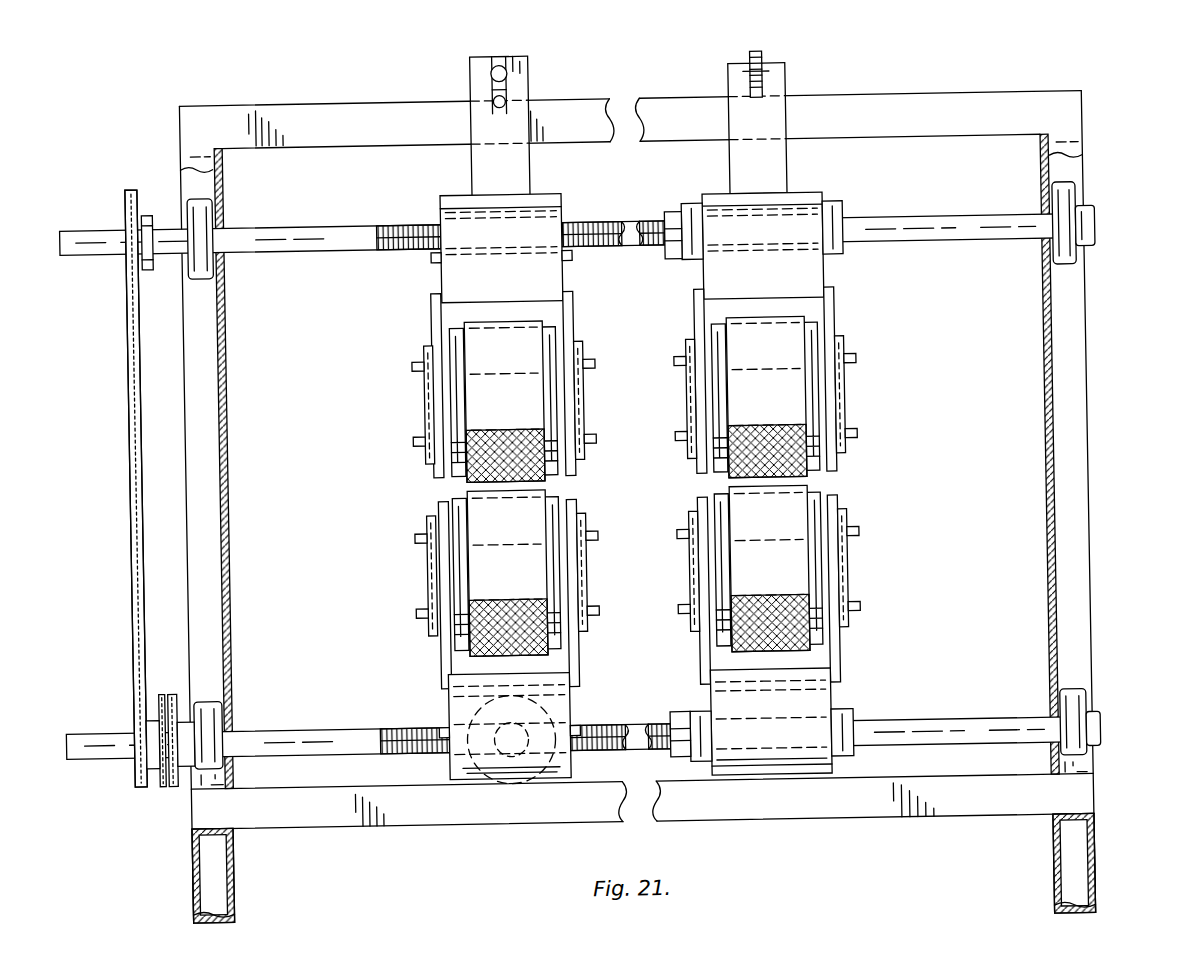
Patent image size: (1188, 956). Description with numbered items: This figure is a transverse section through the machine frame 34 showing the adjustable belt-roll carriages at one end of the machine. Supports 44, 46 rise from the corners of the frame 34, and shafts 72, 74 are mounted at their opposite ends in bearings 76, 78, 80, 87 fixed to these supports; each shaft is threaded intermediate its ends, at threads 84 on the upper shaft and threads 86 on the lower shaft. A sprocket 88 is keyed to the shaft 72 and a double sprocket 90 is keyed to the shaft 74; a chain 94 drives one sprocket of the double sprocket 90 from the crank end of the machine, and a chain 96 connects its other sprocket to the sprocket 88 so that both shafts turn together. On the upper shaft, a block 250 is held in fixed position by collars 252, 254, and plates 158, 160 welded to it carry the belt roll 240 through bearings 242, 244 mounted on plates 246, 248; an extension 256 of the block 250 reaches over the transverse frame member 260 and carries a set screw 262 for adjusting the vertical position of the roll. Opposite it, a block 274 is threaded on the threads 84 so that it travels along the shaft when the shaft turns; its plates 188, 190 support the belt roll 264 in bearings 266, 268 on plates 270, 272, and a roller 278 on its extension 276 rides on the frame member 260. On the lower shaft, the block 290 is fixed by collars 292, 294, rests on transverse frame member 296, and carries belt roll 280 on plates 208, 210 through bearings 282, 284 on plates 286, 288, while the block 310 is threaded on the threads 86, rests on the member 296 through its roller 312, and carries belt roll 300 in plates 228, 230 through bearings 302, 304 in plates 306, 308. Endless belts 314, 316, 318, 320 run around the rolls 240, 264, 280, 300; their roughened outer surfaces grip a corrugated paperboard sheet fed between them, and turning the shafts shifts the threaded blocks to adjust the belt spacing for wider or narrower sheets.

The machine frame 34 is at (603, 493).
The support 44 is at (1062, 150).
The support 46 is at (213, 146).
The shaft 72 is at (1002, 246).
The shaft 74 is at (1000, 725).
The bearing 76 is at (208, 212).
The bearing 78 is at (1077, 212).
The bearing 80 is at (206, 700).
The threads 84 is at (672, 216).
The threads 86 is at (668, 722).
The lower right bearing 87 is at (1080, 700).
The sprocket 88 is at (148, 212).
The double sprocket 90 is at (136, 782).
The chain 94 is at (166, 782).
The chain 96 is at (130, 486).
The plate 158 is at (836, 301).
The plate 160 is at (700, 305).
The plate 188 is at (572, 299).
The plate 190 is at (437, 299).
The plate 208 is at (836, 660).
The plate 210 is at (700, 656).
The plate 228 is at (572, 649).
The plate 230 is at (442, 663).
The belt roll 240 is at (812, 337).
The bearing 242 is at (690, 396).
The bearing 244 is at (854, 386).
The plate 246 is at (692, 352).
The plate 248 is at (847, 353).
The block 250 is at (806, 196).
The collar 252 is at (692, 205).
The collar 254 is at (840, 206).
The extension 256 is at (794, 94).
The transverse frame member 260 is at (642, 102).
The bolt 262 is at (772, 62).
The belt roll 264 is at (556, 342).
The bearing 266 is at (586, 380).
The bearing 268 is at (416, 393).
The plate 270 is at (584, 349).
The plate 272 is at (428, 347).
The block 274 is at (545, 193).
The extension 276 is at (478, 155).
The roller 278 is at (496, 84).
The belt roll 280 is at (822, 498).
The bearing 282 is at (852, 564).
The bearing 284 is at (688, 578).
The plate 286 is at (848, 519).
The plate 288 is at (690, 514).
The block 290 is at (760, 778).
The collar 292 is at (842, 714).
The collar 294 is at (696, 714).
The transverse frame member 296 is at (625, 821).
The belt roll 300 is at (564, 486).
The bearing 302 is at (590, 546).
The bearing 304 is at (428, 567).
The plate 306 is at (585, 581).
The plate 308 is at (416, 614).
The block 310 is at (445, 700).
The roller 312 is at (458, 776).
The endless belt 314 is at (767, 340).
The belt 316 is at (507, 336).
The endless belt 318 is at (790, 584).
The endless belt 320 is at (468, 493).